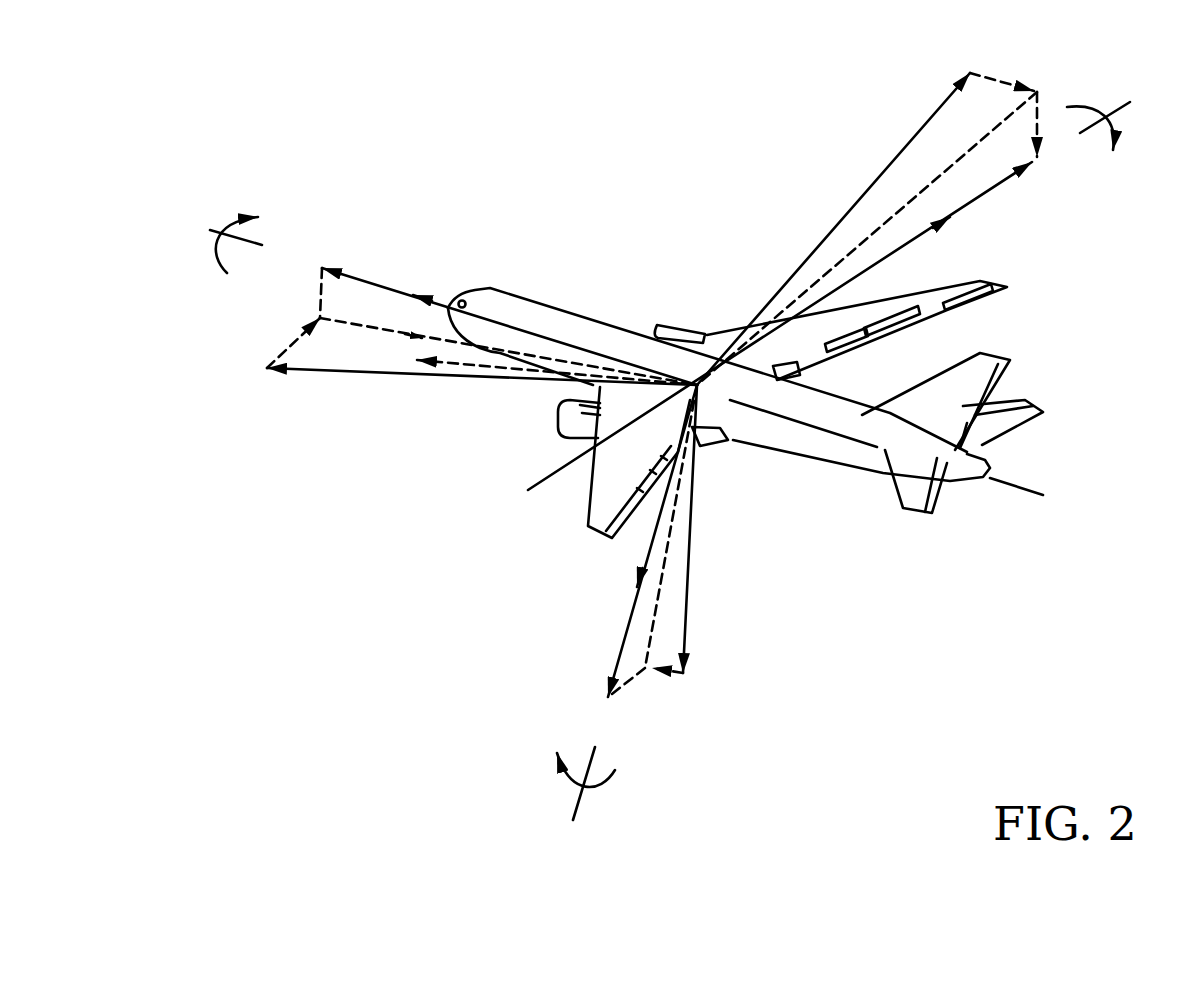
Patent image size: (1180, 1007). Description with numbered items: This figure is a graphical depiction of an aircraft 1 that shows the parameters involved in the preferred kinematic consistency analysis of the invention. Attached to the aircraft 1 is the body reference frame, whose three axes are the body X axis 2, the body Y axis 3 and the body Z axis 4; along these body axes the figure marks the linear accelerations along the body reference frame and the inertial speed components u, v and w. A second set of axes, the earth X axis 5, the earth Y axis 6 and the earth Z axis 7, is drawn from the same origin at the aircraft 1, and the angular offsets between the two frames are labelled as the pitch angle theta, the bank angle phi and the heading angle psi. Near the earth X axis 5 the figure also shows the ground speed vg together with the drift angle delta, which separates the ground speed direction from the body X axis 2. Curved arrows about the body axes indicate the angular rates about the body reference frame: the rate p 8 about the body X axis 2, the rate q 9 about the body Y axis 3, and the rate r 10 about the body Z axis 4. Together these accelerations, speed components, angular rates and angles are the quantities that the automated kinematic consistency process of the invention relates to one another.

The aircraft 1 is at (745, 409).
The body X axis (X_B, velocity u, acceleration n_x) 2 is at (653, 360).
The body Y axis (Y_B, velocity v, acceleration n_y) 3 is at (812, 318).
The body Z axis (Z_B, velocity w, acceleration n_z) 4 is at (638, 574).
The earth X axis (X_E) with pitch angle theta, heading psi, drift delta, ground spee 5 is at (458, 335).
The earth Y axis (Y_E) with heading psi and roll angle phi 6 is at (867, 220).
The earth Z axis (Z_E) with roll angle phi and pitch angle theta 7 is at (666, 567).
The roll rate p 8 is at (222, 236).
The pitch rate q 9 is at (1113, 108).
The yaw rate r 10 is at (586, 802).